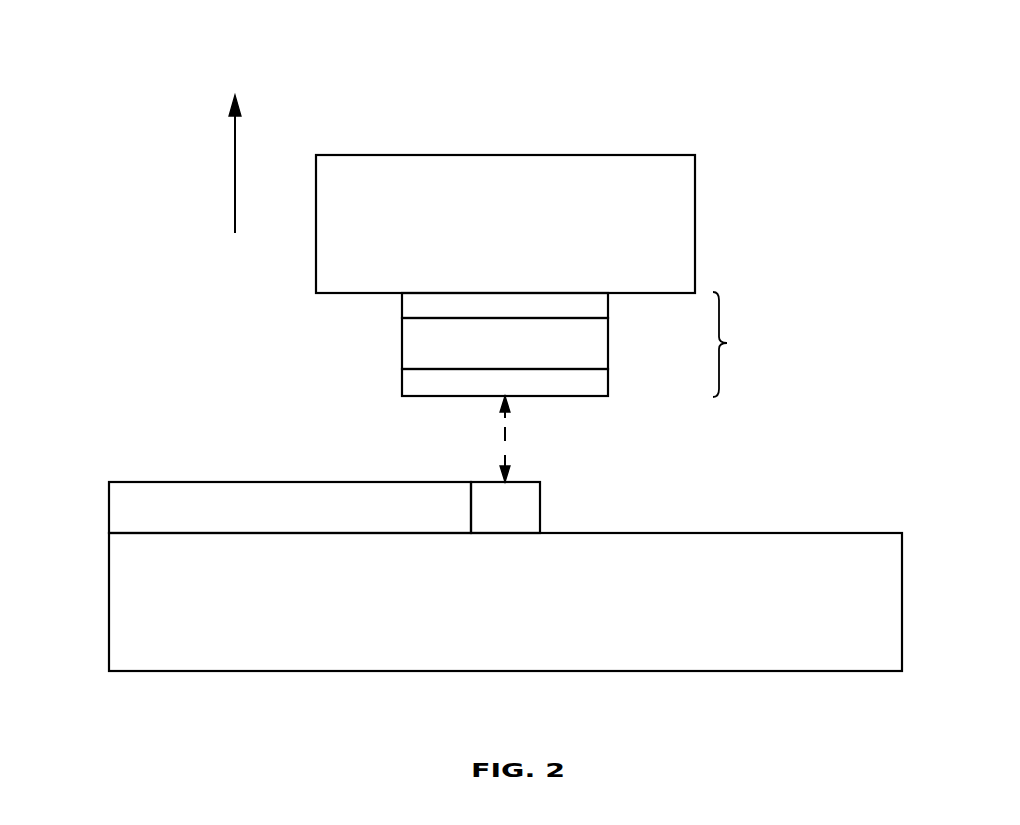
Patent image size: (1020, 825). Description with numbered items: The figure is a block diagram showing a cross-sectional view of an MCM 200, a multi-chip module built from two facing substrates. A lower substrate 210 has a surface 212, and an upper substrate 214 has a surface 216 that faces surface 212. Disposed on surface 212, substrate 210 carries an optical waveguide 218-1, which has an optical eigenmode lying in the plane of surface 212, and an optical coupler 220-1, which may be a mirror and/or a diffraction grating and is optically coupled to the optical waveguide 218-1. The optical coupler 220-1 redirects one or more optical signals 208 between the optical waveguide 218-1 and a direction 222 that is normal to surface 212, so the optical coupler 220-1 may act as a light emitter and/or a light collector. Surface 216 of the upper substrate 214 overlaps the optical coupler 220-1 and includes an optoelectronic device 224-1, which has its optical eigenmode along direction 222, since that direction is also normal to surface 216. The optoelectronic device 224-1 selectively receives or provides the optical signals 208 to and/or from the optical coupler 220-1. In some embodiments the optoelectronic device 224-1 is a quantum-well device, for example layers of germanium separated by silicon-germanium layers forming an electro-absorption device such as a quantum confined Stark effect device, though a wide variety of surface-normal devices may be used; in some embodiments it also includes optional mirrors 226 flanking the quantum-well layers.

The MCM 200 is at (789, 75).
The optical signals 208 is at (500, 455).
The substrate 210 is at (489, 623).
The surface 212 is at (308, 533).
The substrate 214 is at (488, 245).
The surface 216 is at (652, 290).
The optical waveguide 218-1 is at (263, 502).
The optical coupler 220-1 is at (505, 503).
The direction 222 is at (235, 192).
The optoelectronic device 224-1 is at (658, 344).
The mirrors 226 is at (410, 382).